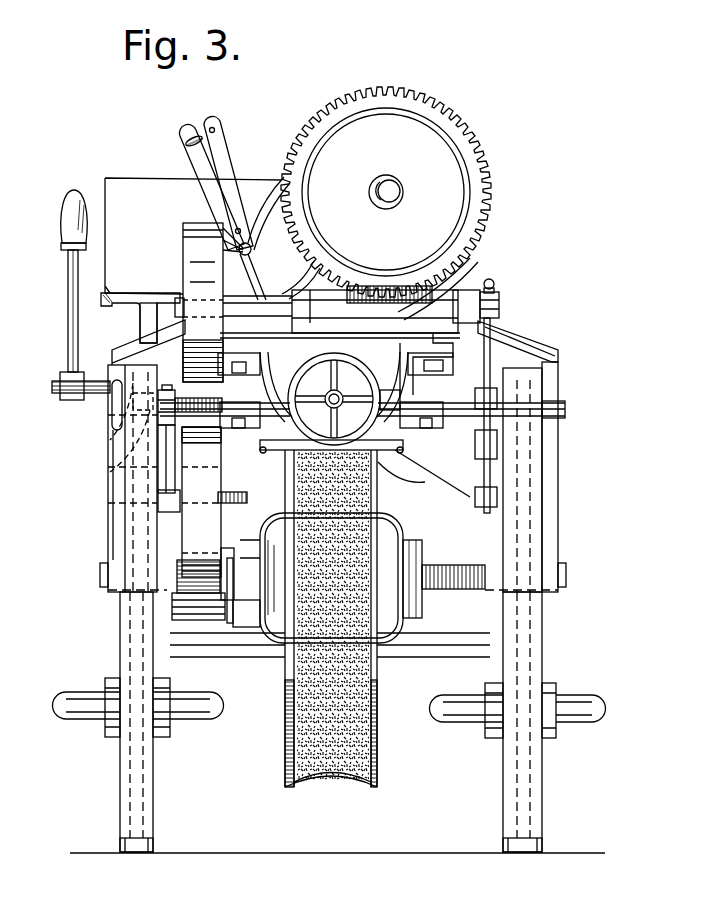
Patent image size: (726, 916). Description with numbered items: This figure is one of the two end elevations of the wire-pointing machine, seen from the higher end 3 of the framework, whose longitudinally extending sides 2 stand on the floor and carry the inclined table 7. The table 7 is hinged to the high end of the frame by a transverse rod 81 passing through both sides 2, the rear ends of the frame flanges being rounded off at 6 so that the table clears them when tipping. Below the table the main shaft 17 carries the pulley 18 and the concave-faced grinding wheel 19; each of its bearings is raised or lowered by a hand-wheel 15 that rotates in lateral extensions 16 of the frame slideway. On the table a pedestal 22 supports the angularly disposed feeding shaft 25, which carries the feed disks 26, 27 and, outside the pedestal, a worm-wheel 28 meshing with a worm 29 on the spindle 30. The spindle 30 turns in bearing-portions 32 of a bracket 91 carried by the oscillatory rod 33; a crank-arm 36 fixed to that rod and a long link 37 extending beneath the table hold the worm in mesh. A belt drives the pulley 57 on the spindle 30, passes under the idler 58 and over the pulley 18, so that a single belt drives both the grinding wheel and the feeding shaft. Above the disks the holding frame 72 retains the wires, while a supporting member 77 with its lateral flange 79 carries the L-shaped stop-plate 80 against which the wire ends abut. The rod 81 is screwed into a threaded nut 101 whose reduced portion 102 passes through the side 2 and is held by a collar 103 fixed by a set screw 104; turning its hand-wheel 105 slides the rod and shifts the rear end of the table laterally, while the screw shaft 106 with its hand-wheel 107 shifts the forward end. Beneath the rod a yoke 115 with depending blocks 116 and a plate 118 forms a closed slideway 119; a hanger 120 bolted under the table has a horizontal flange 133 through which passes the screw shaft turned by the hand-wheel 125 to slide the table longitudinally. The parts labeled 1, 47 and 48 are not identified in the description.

The frame cross beam 1 is at (418, 658).
The sides 2 is at (120, 797).
The end-portion 3 is at (268, 838).
The rounded-off rear ends 6 is at (112, 370).
The table 7 is at (522, 347).
The hand-wheel 15 is at (62, 722).
The lateral extensions 16 is at (106, 688).
The main shaft 17 is at (100, 573).
The pulley 18 is at (205, 624).
The grinding wheel 19 is at (333, 786).
The pedestal 22 is at (254, 277).
The shaft 25 is at (398, 185).
The feed disk 26 is at (252, 204).
The feed disk 27 is at (272, 205).
The worm-wheel 28 is at (462, 117).
The worm 29 is at (390, 285).
The shaft or spindle 30 is at (264, 304).
The bearing-portions 32 is at (505, 340).
The rod or shaft 33 is at (500, 308).
The crank-arm 36 is at (542, 378).
The link 37 is at (482, 495).
The hand lever 47 is at (67, 292).
The lever handle 48 is at (67, 210).
The pulley 57 is at (213, 302).
The idler 58 is at (196, 512).
The holding or supporting frame 72 is at (212, 121).
The supporting member 77 is at (150, 327).
The lateral flange 79 is at (110, 306).
The L-shaped guide-plate 80 is at (193, 236).
The rod 81 is at (566, 409).
The bracket 91 is at (492, 283).
The sleeve or nut 101 is at (118, 443).
The reduced portion 102 is at (128, 460).
The collar 103 is at (160, 440).
The set screw 104 is at (168, 388).
The hand-wheel 105 is at (112, 418).
The screw shaft 106 is at (258, 486).
The hand-wheel 107 is at (112, 533).
The yoke 115 is at (410, 422).
The depending blocks 116 is at (254, 428).
The plate 118 is at (393, 470).
The slideway 119 is at (418, 480).
The hanger 120 is at (437, 372).
The hand-wheel 125 is at (358, 366).
The horizontal flange 133 is at (277, 383).